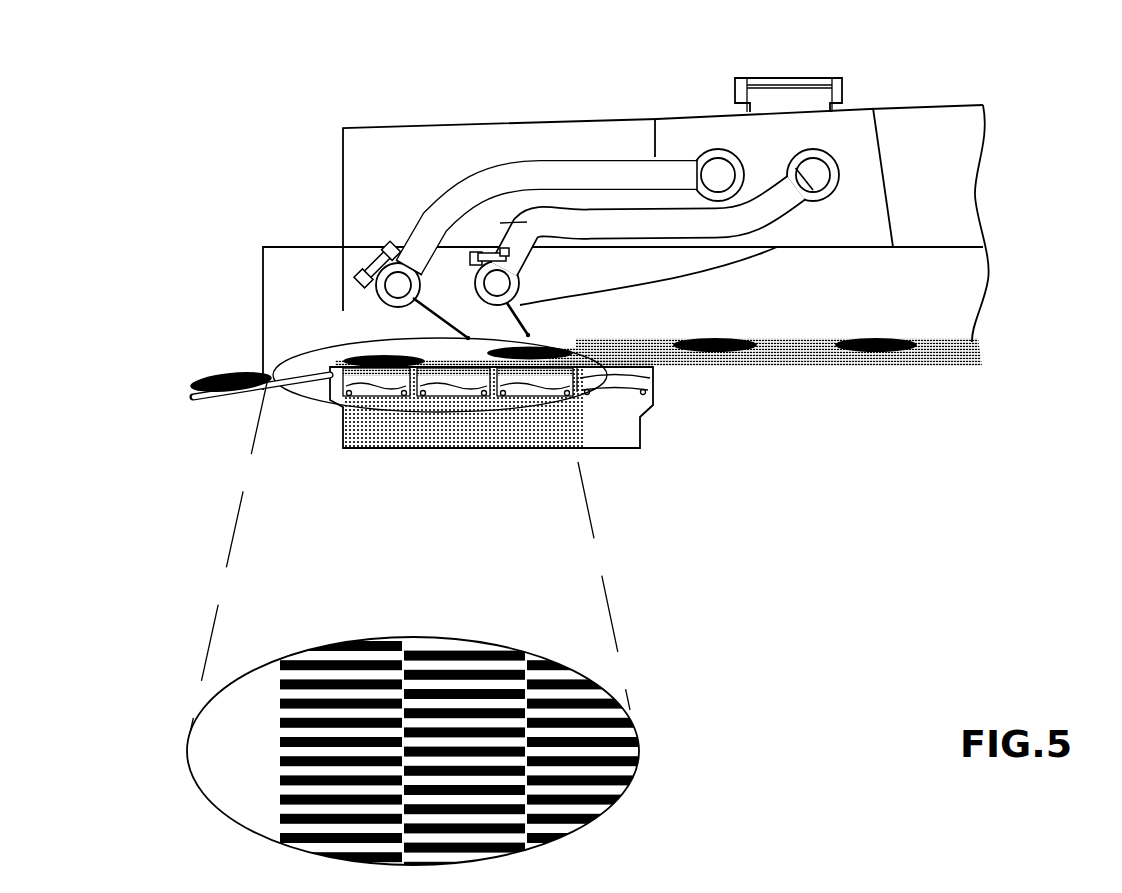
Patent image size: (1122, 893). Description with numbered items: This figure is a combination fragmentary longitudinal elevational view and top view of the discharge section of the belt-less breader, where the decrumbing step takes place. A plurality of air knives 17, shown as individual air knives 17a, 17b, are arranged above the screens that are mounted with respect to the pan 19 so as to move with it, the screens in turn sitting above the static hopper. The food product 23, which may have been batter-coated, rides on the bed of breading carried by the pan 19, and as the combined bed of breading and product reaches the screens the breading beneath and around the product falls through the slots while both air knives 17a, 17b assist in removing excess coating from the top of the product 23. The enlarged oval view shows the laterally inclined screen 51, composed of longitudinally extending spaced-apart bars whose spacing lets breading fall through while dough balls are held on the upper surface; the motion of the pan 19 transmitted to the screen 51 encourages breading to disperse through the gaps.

The air knives 17 is at (626, 208).
The air knife 17a is at (654, 306).
The air knife 17b is at (536, 198).
The pan 19 is at (754, 400).
The food product 23 is at (205, 339).
The laterally inclined screen 51 is at (483, 754).